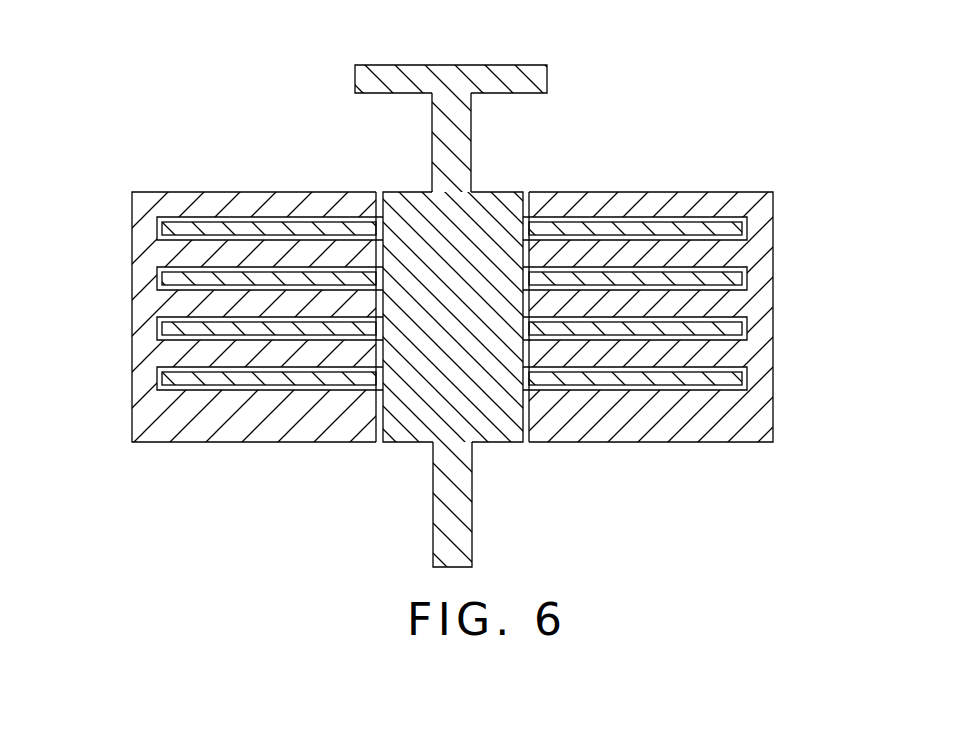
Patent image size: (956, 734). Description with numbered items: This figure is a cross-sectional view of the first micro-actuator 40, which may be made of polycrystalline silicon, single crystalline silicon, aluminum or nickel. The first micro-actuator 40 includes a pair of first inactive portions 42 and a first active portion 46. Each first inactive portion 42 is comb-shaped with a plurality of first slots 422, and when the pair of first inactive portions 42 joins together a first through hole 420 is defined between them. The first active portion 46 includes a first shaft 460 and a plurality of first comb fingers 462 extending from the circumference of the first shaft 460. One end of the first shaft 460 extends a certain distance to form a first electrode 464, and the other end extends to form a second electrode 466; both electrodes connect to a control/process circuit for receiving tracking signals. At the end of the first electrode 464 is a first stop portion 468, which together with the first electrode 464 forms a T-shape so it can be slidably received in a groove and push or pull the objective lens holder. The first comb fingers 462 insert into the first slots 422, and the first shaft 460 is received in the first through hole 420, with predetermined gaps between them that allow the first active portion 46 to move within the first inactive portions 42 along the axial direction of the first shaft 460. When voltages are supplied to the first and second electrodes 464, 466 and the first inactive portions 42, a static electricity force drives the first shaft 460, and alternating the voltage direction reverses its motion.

The first micro-actuator 40 is at (404, 49).
The first inactive portion 42 is at (178, 210).
The first through hole 420 is at (375, 195).
The first slot 422 is at (158, 293).
The first active portion 46 is at (452, 299).
The first shaft 460 is at (485, 227).
The first comb finger 462 is at (237, 232).
The first electrode 464 is at (455, 135).
The second electrode 466 is at (457, 510).
The first stop portion 468 is at (523, 78).